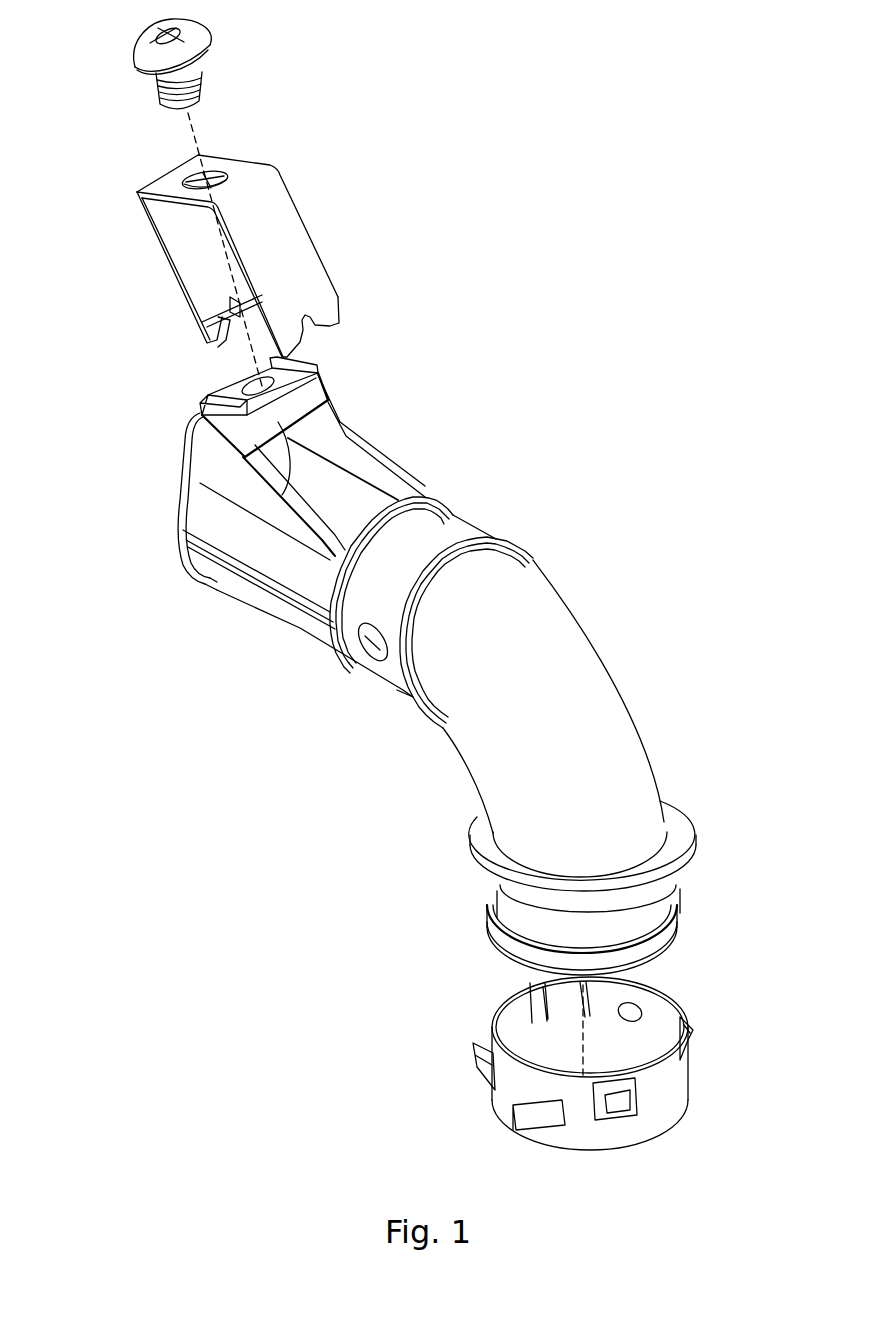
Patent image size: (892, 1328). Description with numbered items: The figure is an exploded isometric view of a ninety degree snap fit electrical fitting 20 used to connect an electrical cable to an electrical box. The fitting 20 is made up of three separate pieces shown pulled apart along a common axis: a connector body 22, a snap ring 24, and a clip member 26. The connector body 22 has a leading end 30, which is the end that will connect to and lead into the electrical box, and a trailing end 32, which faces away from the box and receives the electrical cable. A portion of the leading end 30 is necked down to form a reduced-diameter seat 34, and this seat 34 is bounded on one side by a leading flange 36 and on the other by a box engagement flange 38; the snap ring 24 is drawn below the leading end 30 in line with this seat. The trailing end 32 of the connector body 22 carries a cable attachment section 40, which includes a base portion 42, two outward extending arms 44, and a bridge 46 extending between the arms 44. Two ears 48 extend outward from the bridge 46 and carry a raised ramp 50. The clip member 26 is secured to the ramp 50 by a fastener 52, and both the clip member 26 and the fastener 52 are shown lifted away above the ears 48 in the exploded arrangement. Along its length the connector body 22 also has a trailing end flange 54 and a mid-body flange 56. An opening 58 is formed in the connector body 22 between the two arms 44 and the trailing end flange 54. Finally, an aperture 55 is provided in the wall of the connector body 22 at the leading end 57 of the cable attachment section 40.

The ninety degree snap fit electrical fitting 20 is at (604, 434).
The connector body 22 is at (596, 730).
The snap ring 24 is at (680, 1078).
The clip member 26 is at (306, 230).
The leading end 30 is at (667, 957).
The trailing end 32 is at (177, 507).
The reduced-diameter seat 34 is at (530, 921).
The leading flange 36 is at (673, 905).
The box engagement flange 38 is at (697, 840).
The cable attachment section 40 is at (264, 666).
The base portion 42 is at (243, 603).
The outward extending arms 44 is at (377, 447).
The bridge 46 is at (335, 414).
The ears 48 is at (323, 373).
The raised ramp 50 is at (250, 416).
The fastener 52 is at (196, 30).
The trailing end flange 54 is at (423, 513).
The aperture 55 is at (363, 643).
The mid-body flange 56 is at (530, 557).
The leading end of the cable attachment section 57 is at (397, 690).
The opening 58 is at (350, 497).